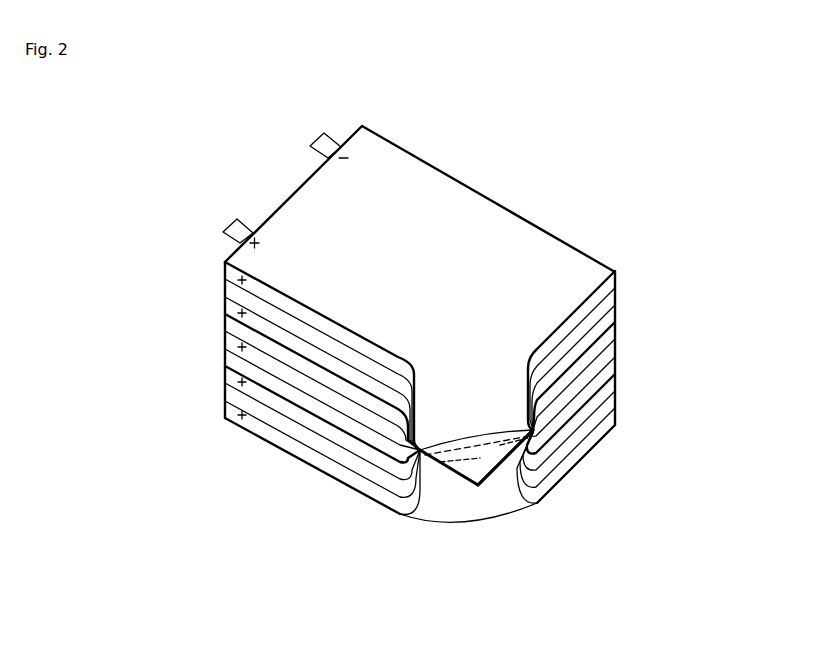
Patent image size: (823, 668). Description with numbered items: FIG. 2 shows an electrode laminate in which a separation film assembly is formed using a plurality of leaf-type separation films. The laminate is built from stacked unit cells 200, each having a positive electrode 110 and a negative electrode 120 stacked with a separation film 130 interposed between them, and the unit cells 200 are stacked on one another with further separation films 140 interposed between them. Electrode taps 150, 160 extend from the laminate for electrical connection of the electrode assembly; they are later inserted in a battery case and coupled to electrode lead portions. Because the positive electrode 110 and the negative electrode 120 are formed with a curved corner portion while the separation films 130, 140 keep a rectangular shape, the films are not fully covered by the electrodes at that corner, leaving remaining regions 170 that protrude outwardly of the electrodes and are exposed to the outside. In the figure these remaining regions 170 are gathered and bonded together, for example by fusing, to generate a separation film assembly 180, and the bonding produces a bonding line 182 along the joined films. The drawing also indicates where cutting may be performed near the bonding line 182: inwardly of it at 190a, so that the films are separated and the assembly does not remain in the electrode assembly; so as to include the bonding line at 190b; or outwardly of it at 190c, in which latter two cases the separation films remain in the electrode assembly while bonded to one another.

The positive electrode 110 is at (225, 366).
The negative electrode 120 is at (225, 383).
The separation film 130 is at (305, 325).
The separation film 140 is at (583, 305).
The electrode tap 150 is at (313, 143).
The electrode tap 160 is at (226, 228).
The remaining region of separation film 170 is at (537, 433).
The separation film assembly 180 is at (462, 473).
The bonding line 182 is at (492, 473).
The cutting position inward of bonding line 190a is at (425, 447).
The cutting position including bonding line 190b is at (468, 447).
The cutting position outward of bonding line 190c is at (500, 445).
The unit cell 200 is at (630, 263).